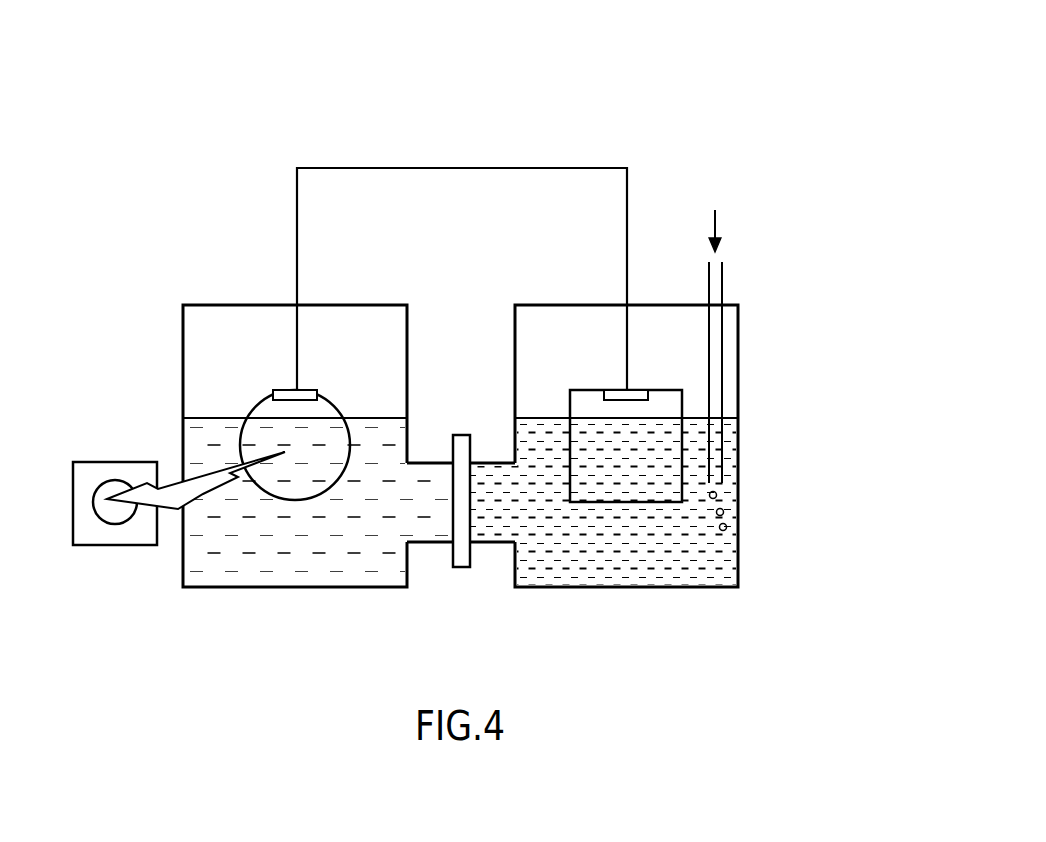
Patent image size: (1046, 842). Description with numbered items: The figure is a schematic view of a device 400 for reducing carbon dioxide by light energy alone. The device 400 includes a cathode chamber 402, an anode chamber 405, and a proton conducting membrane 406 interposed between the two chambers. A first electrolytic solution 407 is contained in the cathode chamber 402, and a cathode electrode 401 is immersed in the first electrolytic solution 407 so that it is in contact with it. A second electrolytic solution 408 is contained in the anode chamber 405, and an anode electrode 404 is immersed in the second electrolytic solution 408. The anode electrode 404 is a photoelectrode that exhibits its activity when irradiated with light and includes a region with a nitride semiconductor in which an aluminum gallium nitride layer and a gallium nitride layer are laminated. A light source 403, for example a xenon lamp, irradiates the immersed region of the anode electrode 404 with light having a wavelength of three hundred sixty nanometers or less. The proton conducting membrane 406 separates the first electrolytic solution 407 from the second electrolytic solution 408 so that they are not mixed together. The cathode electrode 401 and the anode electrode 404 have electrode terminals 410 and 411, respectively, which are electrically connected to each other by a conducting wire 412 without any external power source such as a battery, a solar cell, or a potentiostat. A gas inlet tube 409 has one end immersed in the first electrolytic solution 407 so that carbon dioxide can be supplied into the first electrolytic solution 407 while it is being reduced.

The device 400 is at (632, 96).
The cathode electrode 401 is at (628, 485).
The cathode chamber 402 is at (740, 338).
The light source 403 is at (93, 533).
The anode electrode 404 is at (292, 487).
The anode chamber 405 is at (183, 338).
The proton conducting membrane 406 is at (462, 553).
The first electrolytic solution 407 is at (720, 563).
The second electrolytic solution 408 is at (205, 435).
The gas inlet tube 409 is at (721, 287).
The electrode terminal 410 is at (633, 397).
The electrode terminal 411 is at (282, 392).
The conducting wire 412 is at (458, 167).